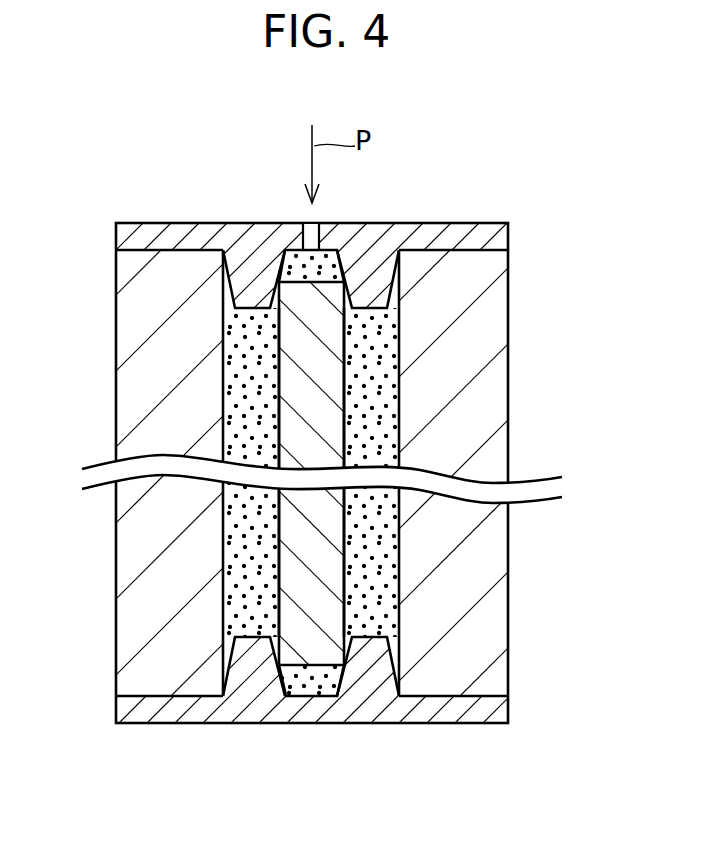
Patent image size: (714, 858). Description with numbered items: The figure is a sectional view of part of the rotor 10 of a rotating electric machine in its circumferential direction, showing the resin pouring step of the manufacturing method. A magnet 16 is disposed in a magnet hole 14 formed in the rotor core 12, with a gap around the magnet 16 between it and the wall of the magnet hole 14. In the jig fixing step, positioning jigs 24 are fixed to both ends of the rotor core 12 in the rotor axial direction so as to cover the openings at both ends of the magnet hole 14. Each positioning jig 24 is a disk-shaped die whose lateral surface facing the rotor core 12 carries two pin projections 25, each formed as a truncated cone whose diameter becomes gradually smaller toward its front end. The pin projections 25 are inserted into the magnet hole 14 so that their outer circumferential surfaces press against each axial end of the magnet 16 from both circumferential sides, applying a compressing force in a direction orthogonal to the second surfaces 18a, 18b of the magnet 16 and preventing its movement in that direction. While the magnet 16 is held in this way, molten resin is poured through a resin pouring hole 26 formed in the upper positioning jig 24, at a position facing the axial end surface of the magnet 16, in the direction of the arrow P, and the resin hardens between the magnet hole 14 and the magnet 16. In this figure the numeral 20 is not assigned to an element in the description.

The rotor 10 is at (508, 295).
The rotor core 12 is at (448, 355).
The magnet hole 14 is at (395, 595).
The magnet 16 is at (317, 647).
The second surface 18a is at (277, 387).
The second surface 18b is at (348, 340).
The filler material 20 is at (252, 411).
The positioning jig 24 is at (393, 221).
The pin projection 25 is at (253, 272).
The resin pouring hole 26 is at (303, 238).